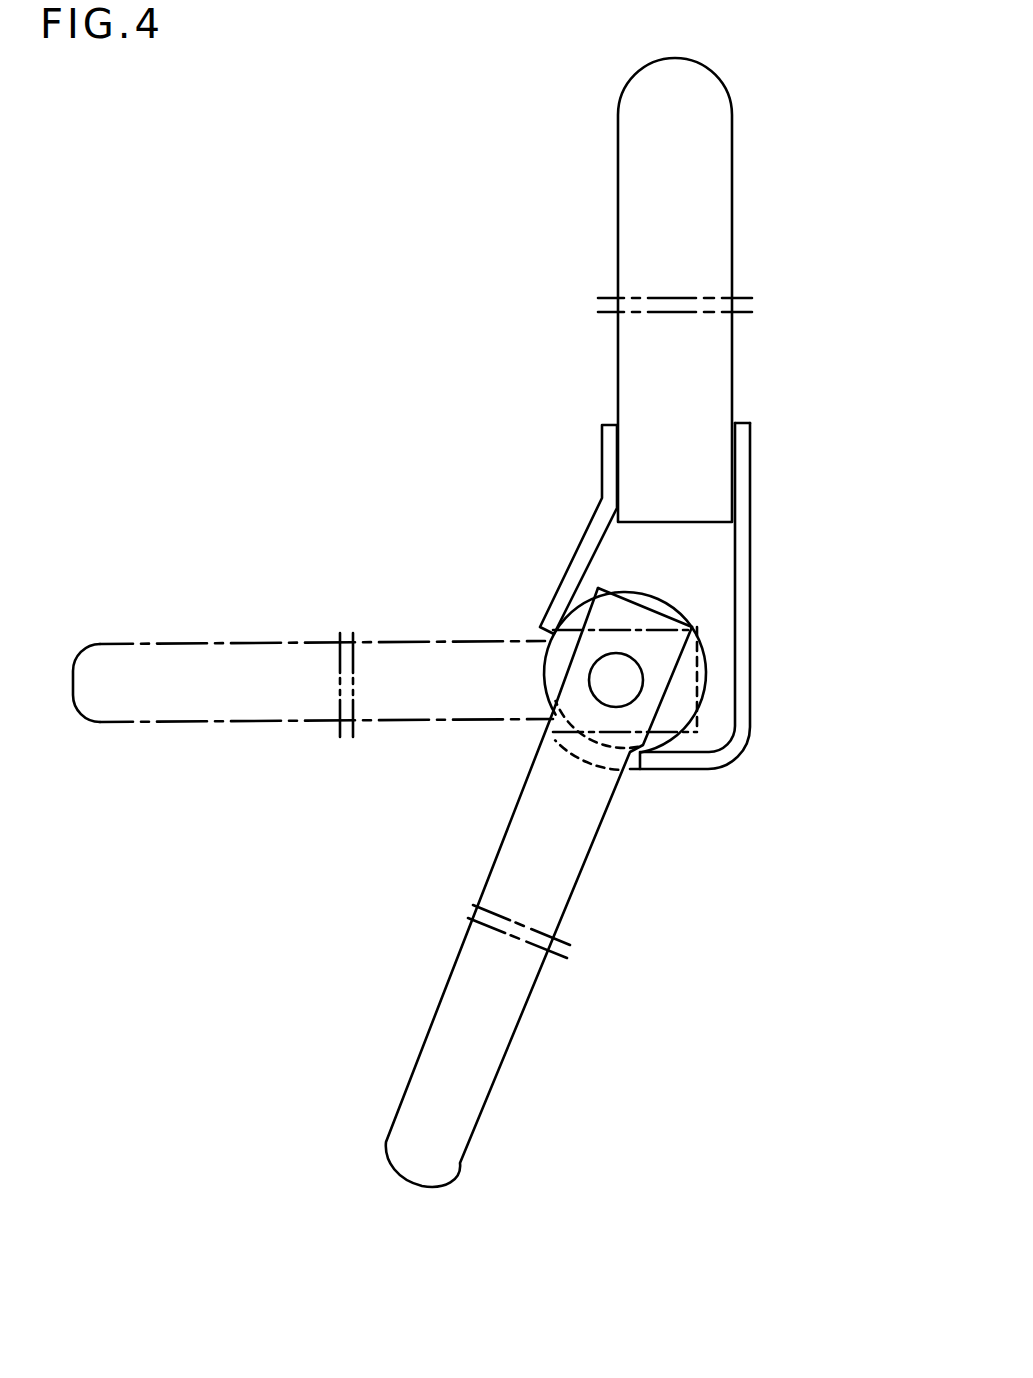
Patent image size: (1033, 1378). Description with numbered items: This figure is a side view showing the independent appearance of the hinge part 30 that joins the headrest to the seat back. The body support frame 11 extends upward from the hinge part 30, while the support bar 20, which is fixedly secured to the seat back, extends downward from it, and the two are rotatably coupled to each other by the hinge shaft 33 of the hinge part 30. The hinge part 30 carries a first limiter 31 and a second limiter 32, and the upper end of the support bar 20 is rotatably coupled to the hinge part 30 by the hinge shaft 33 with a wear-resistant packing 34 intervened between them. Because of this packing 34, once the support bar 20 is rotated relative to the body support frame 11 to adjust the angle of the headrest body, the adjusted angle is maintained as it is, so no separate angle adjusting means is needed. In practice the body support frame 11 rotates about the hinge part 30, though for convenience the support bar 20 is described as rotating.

The body support frame 11 is at (818, 190).
The support bar 20 is at (638, 1118).
The hinge part 30 is at (847, 748).
The first limiter 31 is at (775, 905).
The second limiter 32 is at (552, 607).
The hinge shaft 33 is at (835, 691).
The wear-resistant packing 34 is at (877, 472).